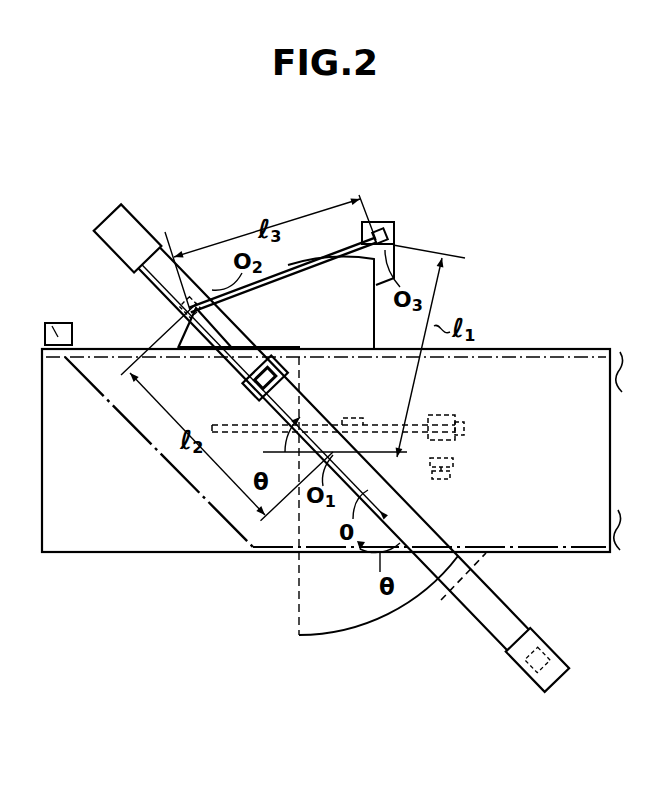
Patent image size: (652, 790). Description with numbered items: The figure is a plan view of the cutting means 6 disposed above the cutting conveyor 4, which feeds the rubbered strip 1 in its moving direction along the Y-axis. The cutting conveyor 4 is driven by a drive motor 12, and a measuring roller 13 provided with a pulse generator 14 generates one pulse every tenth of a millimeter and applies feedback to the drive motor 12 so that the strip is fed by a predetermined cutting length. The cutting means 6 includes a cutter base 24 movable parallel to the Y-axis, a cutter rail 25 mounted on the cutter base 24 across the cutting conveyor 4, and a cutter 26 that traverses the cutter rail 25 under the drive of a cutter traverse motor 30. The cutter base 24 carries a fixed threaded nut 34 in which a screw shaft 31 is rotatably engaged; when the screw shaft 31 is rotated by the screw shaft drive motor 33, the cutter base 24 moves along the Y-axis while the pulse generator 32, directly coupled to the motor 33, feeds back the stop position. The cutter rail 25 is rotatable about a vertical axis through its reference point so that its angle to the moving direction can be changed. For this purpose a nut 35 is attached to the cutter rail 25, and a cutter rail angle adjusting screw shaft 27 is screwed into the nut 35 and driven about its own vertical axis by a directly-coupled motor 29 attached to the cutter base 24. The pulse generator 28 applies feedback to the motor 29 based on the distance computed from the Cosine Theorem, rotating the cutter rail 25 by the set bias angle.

The rubbered strip 1 is at (614, 349).
The cutting conveyor 4 is at (552, 348).
The cutting means 6 is at (172, 246).
The drive motor 12 is at (54, 323).
The measuring roller 13 is at (454, 462).
The pulse generator 14 is at (450, 476).
The cutter base 24 is at (352, 322).
The cutter rail 25 is at (461, 611).
The cutter 26 is at (260, 366).
The cutter rail angle adjusting screw shaft 27 is at (318, 262).
The pulse generator 28 is at (395, 238).
The directly-coupled motor 29 is at (378, 232).
The cutter traverse motor 30 is at (546, 655).
The screw shaft 31 is at (230, 425).
The pulse generator 32 is at (466, 428).
The screw shaft drive motor 33 is at (440, 414).
The fixed threaded nut 34 is at (352, 417).
The nut 35 is at (172, 301).